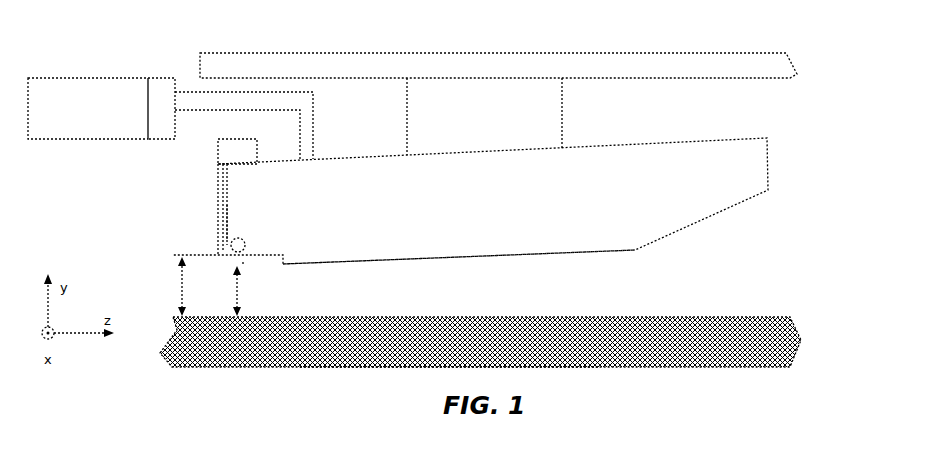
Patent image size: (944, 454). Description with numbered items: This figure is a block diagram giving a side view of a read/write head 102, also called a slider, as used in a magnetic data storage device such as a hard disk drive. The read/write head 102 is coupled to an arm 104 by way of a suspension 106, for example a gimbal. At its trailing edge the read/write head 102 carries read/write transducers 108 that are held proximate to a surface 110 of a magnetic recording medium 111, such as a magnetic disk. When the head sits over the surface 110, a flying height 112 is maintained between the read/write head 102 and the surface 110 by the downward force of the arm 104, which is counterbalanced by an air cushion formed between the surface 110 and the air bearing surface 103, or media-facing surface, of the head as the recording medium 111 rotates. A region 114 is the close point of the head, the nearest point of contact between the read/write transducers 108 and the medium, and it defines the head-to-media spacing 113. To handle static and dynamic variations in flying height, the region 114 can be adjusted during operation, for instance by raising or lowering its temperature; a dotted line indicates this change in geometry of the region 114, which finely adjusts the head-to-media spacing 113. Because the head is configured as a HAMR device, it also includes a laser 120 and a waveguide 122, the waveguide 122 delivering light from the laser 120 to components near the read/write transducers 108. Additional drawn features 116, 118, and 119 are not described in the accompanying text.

The read/write head 102 is at (677, 140).
The air bearing surface 103 is at (368, 264).
The arm 104 is at (722, 57).
The suspension 106 is at (563, 110).
The read/write transducers 108 is at (240, 240).
The surface 110 is at (676, 318).
The magnetic recording medium 111 is at (690, 368).
The flying height 112 is at (164, 286).
The head-to-media spacing 113 is at (220, 291).
The region 114 is at (243, 262).
The sensor 116 is at (228, 218).
The controller 118 is at (82, 77).
The controller interface 119 is at (152, 77).
The laser 120 is at (238, 147).
The waveguide 122 is at (218, 182).